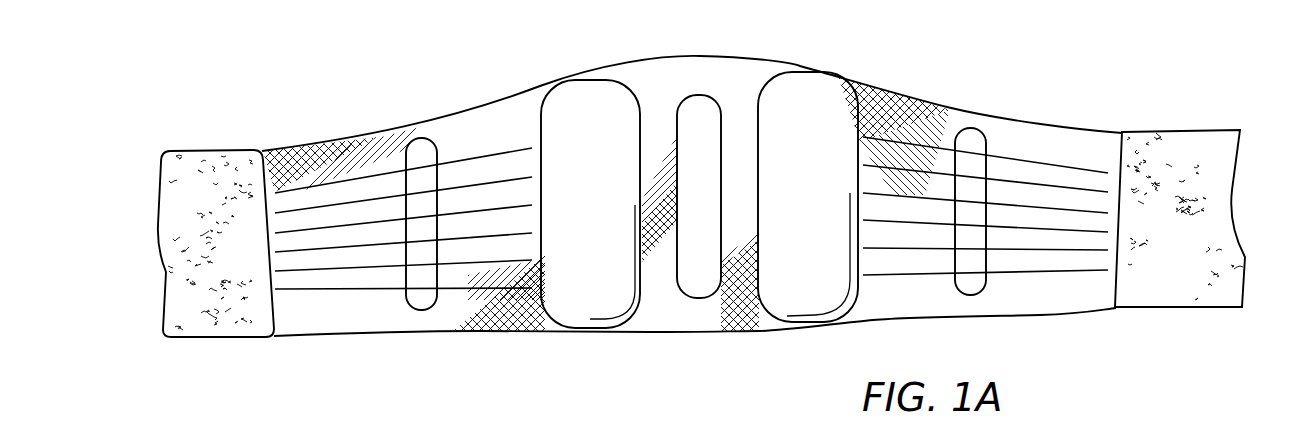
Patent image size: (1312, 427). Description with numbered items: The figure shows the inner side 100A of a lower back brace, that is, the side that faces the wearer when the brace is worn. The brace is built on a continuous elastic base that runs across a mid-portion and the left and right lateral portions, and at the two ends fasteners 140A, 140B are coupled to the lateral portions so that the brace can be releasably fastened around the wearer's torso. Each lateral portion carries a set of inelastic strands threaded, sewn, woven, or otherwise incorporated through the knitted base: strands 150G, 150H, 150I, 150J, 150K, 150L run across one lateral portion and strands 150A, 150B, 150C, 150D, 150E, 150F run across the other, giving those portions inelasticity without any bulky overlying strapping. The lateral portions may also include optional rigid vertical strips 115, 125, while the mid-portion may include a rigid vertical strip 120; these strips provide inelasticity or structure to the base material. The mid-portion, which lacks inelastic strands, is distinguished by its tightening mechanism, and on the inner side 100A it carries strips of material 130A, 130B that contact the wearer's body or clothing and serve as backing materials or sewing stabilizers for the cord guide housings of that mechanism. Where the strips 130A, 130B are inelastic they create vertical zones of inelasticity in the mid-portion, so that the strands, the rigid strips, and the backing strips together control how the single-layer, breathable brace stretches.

The inner side 100A is at (1203, 98).
The rigid vertical strip 115 is at (423, 150).
The rigid vertical strip 120 is at (705, 288).
The rigid vertical strip 125 is at (972, 142).
The strip of material 130A is at (582, 107).
The strip of material 130B is at (823, 108).
The fastener 140A is at (215, 336).
The fastener 140B is at (1183, 308).
The inelastic strand 150A is at (998, 157).
The inelastic strand 150B is at (1042, 182).
The inelastic strand 150C is at (1082, 205).
The inelastic strand 150D is at (1012, 237).
The inelastic strand 150E is at (1048, 248).
The inelastic strand 150F is at (1095, 270).
The inelastic strand 150G is at (310, 188).
The inelastic strand 150H is at (353, 203).
The inelastic strand 150I is at (395, 223).
The inelastic strand 150J is at (302, 253).
The inelastic strand 150K is at (350, 272).
The inelastic strand 150L is at (378, 290).